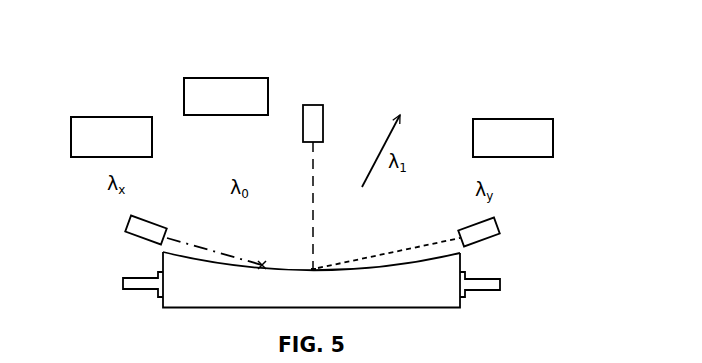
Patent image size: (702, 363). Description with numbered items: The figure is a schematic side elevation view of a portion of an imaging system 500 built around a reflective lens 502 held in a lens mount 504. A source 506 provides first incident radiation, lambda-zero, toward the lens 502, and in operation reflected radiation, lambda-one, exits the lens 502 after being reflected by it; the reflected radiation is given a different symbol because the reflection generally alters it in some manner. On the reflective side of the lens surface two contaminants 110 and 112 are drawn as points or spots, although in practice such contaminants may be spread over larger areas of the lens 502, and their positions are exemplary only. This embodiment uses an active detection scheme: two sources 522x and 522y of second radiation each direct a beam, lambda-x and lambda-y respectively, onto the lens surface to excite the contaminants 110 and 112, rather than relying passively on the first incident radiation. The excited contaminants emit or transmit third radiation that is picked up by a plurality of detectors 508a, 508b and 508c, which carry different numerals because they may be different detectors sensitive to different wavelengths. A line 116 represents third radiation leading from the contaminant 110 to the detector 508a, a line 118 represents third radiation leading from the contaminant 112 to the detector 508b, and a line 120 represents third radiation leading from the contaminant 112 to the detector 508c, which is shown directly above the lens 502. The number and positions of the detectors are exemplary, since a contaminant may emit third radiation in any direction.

The imaging system 500 is at (143, 80).
The reflective lens 502 is at (333, 302).
The lens mount 504 is at (124, 287).
The source of first incident radiation 506 is at (271, 193).
The detector 508a is at (152, 226).
The detector 508b is at (487, 229).
The detector 508c is at (314, 125).
The contaminant 110 is at (288, 222).
The contaminant 112 is at (315, 267).
The line representing third radiation 116 is at (213, 253).
The line representing third radiation 118 is at (412, 245).
The line representing third radiation 120 is at (312, 181).
The source of second radiation 522x is at (193, 220).
The source of second radiation 522y is at (423, 220).